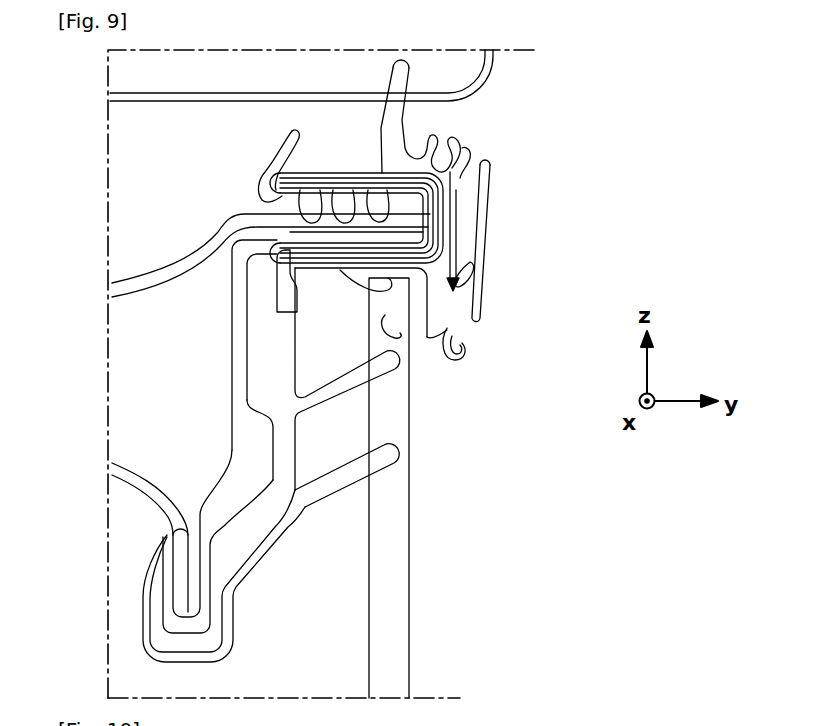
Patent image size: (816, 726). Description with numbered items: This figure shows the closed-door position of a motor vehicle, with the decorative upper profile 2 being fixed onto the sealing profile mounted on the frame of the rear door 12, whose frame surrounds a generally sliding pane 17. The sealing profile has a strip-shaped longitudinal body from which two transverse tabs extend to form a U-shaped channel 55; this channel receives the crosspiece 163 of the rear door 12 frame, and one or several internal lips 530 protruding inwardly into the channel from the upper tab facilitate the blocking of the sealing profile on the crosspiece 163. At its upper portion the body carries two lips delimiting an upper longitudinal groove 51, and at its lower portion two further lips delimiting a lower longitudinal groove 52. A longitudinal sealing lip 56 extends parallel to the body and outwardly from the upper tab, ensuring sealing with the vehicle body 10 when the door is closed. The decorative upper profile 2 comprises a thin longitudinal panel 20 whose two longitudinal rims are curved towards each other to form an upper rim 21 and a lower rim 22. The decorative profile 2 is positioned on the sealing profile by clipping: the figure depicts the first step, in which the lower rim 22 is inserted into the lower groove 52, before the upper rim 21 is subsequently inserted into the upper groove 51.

The decorative upper profile 2 is at (497, 253).
The vehicle body 10 is at (206, 101).
The rear door 12 is at (130, 537).
The sliding pane 17 is at (390, 562).
The thin longitudinal panel 20 is at (492, 203).
The upper rim 21 is at (462, 150).
The lower rim 22 is at (465, 343).
The upper longitudinal groove 51 is at (450, 166).
The lower longitudinal groove 52 is at (447, 310).
The U-shaped channel 55 is at (284, 202).
The longitudinal sealing lip 56 is at (384, 138).
The crosspiece 163 is at (182, 272).
The internal lips 530 is at (382, 208).